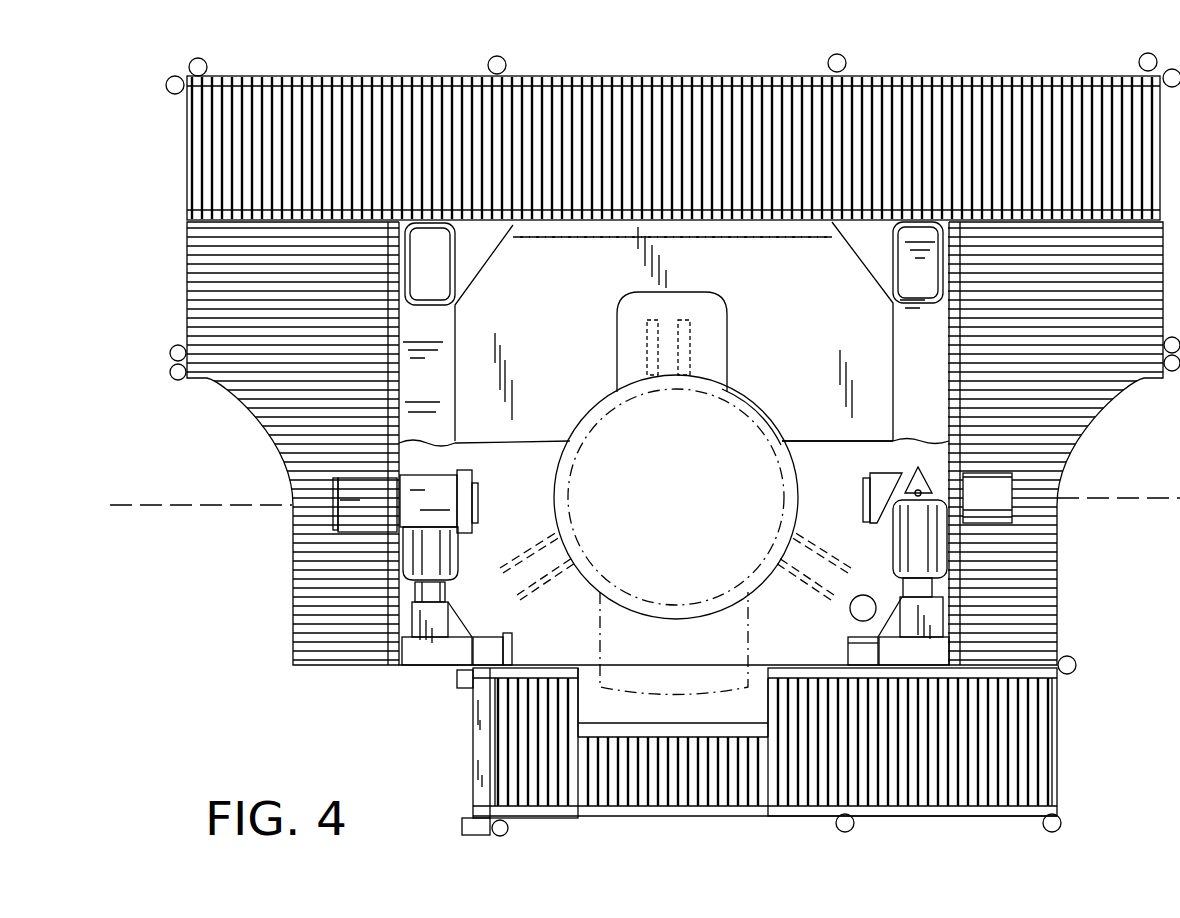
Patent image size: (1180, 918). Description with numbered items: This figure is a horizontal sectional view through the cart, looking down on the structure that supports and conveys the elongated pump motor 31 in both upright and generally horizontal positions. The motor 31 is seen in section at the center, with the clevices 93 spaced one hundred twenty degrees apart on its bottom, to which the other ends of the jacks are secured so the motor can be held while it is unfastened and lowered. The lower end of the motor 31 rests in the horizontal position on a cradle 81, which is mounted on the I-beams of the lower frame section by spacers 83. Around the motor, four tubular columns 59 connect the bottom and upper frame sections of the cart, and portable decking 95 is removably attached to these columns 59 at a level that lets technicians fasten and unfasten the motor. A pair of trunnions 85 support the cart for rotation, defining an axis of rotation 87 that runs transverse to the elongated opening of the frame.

The portable decking 95 is at (698, 88).
The tubular columns 59 is at (455, 267).
The spacers 83 is at (740, 238).
The clevices 93 is at (692, 342).
The pump motor 31 is at (750, 413).
The trunnions 85 is at (438, 493).
The cradle 81 is at (800, 412).
The axis of rotation 87 is at (253, 507).